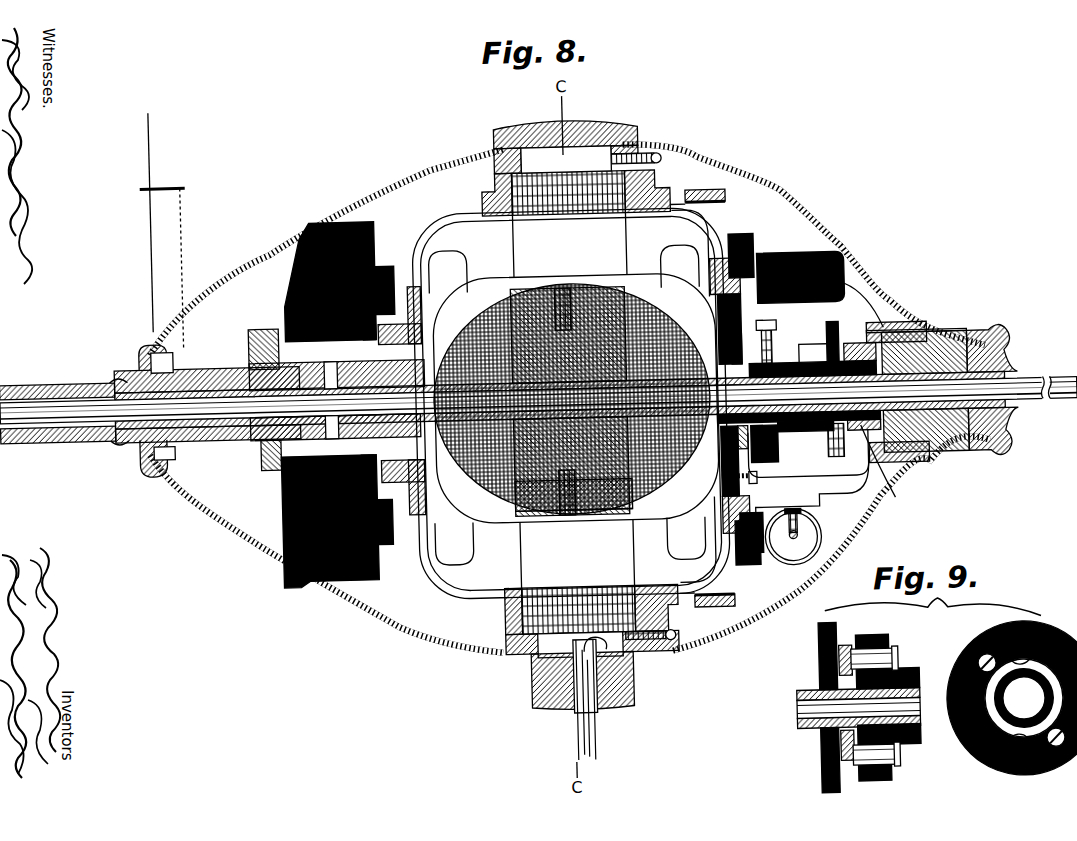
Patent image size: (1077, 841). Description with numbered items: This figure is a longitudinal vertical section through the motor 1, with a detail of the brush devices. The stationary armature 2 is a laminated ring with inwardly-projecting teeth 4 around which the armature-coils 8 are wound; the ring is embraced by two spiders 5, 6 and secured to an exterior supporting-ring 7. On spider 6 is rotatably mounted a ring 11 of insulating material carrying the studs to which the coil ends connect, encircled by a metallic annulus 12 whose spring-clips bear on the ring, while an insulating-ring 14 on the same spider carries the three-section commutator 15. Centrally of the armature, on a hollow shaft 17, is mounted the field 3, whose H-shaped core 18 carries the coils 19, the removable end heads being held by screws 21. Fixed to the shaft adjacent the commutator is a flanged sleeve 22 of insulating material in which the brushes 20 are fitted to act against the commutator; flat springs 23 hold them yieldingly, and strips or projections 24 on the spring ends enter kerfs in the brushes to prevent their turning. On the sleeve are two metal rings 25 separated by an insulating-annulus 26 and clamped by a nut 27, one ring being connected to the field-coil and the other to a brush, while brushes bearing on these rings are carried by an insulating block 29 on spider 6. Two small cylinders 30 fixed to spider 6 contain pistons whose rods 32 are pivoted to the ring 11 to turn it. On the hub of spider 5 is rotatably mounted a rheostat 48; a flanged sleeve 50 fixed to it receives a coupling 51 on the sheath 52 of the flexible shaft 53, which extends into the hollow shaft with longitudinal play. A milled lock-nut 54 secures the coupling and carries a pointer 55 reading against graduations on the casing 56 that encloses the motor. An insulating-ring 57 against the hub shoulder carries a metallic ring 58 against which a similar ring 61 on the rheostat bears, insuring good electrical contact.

In FIG. 8, the motor 1 is at (168, 124).
In FIG. 8, the armature 2 is at (582, 214).
In FIG. 8, the field 3 is at (172, 235).
In FIG. 8, the teeth 4 is at (172, 289).
In FIG. 8, the spider 5 is at (452, 406).
In FIG. 8, the spider 6 is at (687, 396).
In FIG. 8, the exterior supporting-ring 7 is at (618, 128).
In FIG. 8, the armature-coils 8 is at (462, 506).
In FIG. 8, the ring 11 is at (752, 246).
In FIG. 8, the metallic annulus 12 is at (709, 193).
In FIG. 8, the insulating-ring 14 is at (718, 296).
In FIG. 9, the insulating-ring 14 is at (818, 641).
In FIG. 8, the commutator 15 is at (808, 454).
In FIG. 9, the commutator 15 is at (845, 642).
In FIG. 8, the hollow shaft 17 is at (640, 378).
In FIG. 8, the core 18 is at (572, 399).
In FIG. 8, the coils 19 is at (642, 325).
In FIG. 9, the brushes 20 is at (1043, 662).
In FIG. 8, the screws 21 is at (565, 290).
In FIG. 8, the flanged sleeve 22 is at (792, 366).
In FIG. 9, the flanged sleeve 22 is at (917, 738).
In FIG. 9, the flat springs 23 is at (900, 650).
In FIG. 9, the strips or projections 24 is at (885, 647).
In FIG. 8, the metal rings 25 is at (840, 350).
In FIG. 9, the metal rings 25 is at (1011, 700).
In FIG. 8, the insulating-annulus 26 is at (835, 465).
In FIG. 8, the nut 27 is at (884, 473).
In FIG. 8, the block 29 is at (795, 258).
In FIG. 8, the cylinders 30 is at (820, 570).
In FIG. 8, the rods 32 is at (793, 536).
In FIG. 8, the rheostat 48 is at (380, 226).
In FIG. 8, the flanged sleeve 50 is at (245, 428).
In FIG. 8, the coupling 51 is at (118, 432).
In FIG. 8, the sheath 52 is at (50, 430).
In FIG. 8, the flexible shaft 53 is at (560, 400).
In FIG. 8, the milled lock-nut 54 is at (155, 468).
In FIG. 8, the pointer 55 is at (186, 178).
In FIG. 8, the shell or casing 56 is at (318, 236).
In FIG. 8, the insulating-ring 57 is at (432, 330).
In FIG. 8, the metallic ring 58 is at (408, 465).
In FIG. 8, the ring 61 is at (404, 485).